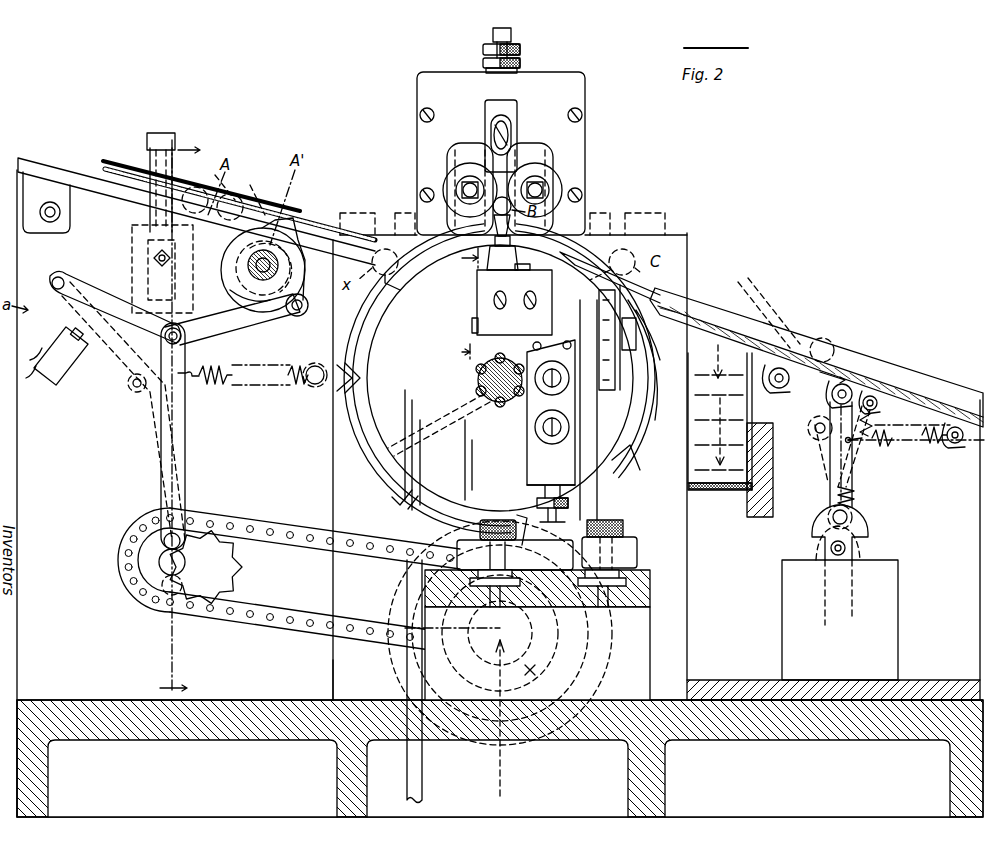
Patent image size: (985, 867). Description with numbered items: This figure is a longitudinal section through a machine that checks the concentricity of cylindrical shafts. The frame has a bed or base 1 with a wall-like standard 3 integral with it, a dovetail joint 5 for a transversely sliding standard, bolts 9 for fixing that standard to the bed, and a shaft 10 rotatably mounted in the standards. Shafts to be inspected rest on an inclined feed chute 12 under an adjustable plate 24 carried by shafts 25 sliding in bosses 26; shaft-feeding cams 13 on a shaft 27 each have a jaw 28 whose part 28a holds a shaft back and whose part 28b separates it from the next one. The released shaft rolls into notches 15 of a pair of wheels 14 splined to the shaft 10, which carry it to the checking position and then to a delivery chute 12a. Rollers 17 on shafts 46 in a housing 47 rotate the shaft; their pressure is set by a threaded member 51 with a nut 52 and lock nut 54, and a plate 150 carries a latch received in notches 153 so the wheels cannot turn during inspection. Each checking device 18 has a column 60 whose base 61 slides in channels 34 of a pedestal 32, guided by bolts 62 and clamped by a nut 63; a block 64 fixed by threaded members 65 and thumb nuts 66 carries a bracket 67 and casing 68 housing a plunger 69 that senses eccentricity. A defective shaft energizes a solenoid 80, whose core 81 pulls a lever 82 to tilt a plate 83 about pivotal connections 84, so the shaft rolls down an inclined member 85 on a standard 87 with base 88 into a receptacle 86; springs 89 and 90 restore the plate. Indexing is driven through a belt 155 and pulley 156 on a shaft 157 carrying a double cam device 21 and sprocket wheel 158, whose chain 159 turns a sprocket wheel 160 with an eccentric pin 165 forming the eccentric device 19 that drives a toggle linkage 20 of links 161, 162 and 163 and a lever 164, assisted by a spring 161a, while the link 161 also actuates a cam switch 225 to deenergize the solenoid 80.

The bed or base 1 is at (96, 742).
The standard 3 is at (333, 683).
The dovetail joint 5 is at (172, 418).
The bolts 9 is at (463, 304).
The shaft 10 is at (505, 402).
The feed hopper or chute 12 is at (40, 160).
The delivery chute 12a is at (932, 388).
The shaft-feeding cams 13 is at (238, 290).
The shaft-carrying wheels 14 is at (360, 440).
The notches 15 is at (400, 492).
The rollers 17 is at (470, 152).
The switch devices 18 is at (470, 305).
The eccentric device 19 is at (152, 551).
The toggle motion linkage 20 is at (195, 409).
The double cam device 21 is at (492, 720).
The plate 24 is at (112, 160).
The shafts 25 is at (120, 188).
The bosses 26 is at (132, 242).
The shaft 27 is at (266, 308).
The jaw 28 is at (244, 255).
The jaw part 28a is at (290, 222).
The jaw part 28b is at (258, 225).
The pedestal 32 is at (648, 638).
The channels 34 is at (500, 620).
The shafts 46 is at (462, 190).
The housing 47 is at (586, 135).
The threaded member 51 is at (493, 36).
The nut 52 is at (521, 63).
The lock nut 54 is at (521, 47).
The column 60 is at (537, 500).
The base 61 is at (478, 530).
The bolts 62 is at (490, 585).
The nut 63 is at (500, 520).
The block 64 is at (535, 452).
The threaded members 65 is at (560, 420).
The thumb nuts 66 is at (552, 387).
The bracket 67 is at (562, 336).
The casing 68 is at (553, 290).
The plunger 69 is at (512, 248).
The solenoid 80 is at (888, 605).
The solenoid core 81 is at (858, 552).
The lever 82 is at (830, 480).
The plate 83 is at (775, 340).
The pivotal connections 84 is at (780, 388).
The inclined member 85 is at (668, 290).
The reject receptacle 86 is at (726, 491).
The standard 87 is at (598, 508).
The base 88 is at (637, 540).
The spring 89 is at (855, 495).
The spring 90 is at (928, 447).
The plate 150 is at (512, 122).
The notches 153 is at (365, 376).
The belt 155 is at (424, 795).
The pulley 156 is at (545, 672).
The shaft 157 is at (500, 633).
The sprocket wheel 158 is at (425, 620).
The chain 159 is at (278, 630).
The sprocket wheel 160 is at (222, 576).
The link 161 is at (96, 288).
The spring 161a is at (262, 386).
The link 162 is at (236, 330).
The link 163 is at (170, 468).
The lever 164 is at (298, 314).
The eccentric pin 165 is at (182, 541).
The cam switch 225 is at (62, 382).